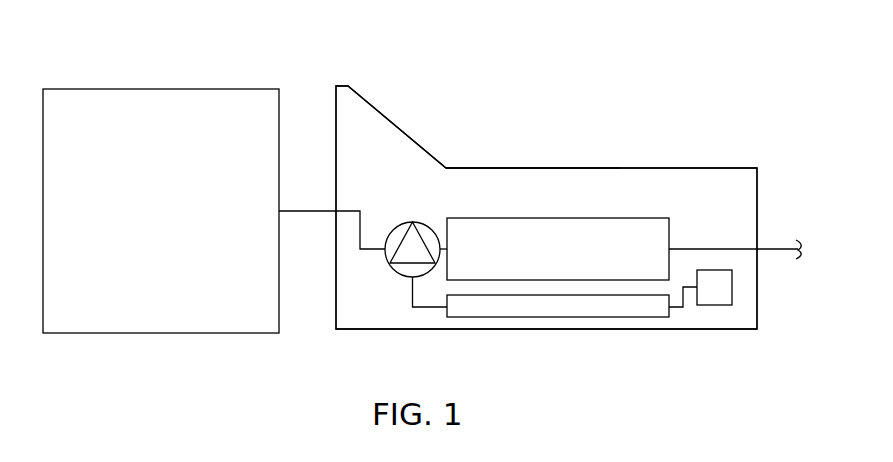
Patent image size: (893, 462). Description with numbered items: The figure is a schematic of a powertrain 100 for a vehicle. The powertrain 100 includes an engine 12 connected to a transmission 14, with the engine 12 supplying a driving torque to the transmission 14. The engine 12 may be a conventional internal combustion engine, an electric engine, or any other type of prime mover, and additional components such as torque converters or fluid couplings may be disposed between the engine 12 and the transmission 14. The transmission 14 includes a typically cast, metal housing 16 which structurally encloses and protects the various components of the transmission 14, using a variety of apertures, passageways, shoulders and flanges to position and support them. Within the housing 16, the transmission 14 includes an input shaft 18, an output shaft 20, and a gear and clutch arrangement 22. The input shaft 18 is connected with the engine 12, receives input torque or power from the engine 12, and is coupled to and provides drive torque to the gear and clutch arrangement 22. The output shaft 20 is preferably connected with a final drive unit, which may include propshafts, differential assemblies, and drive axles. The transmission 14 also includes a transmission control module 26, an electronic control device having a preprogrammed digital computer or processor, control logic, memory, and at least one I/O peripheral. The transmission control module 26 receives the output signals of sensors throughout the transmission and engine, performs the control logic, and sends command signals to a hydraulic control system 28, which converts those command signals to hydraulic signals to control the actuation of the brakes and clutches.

The system 100 is at (651, 110).
The engine 12 is at (167, 216).
The transmission 14 is at (607, 167).
The housing 16 is at (480, 167).
The input shaft 18 is at (349, 208).
The output shaft 20 is at (715, 248).
The gear and clutch arrangement 22 is at (563, 258).
The transmission control module 26 is at (713, 305).
The hydraulic control system 28 is at (572, 318).